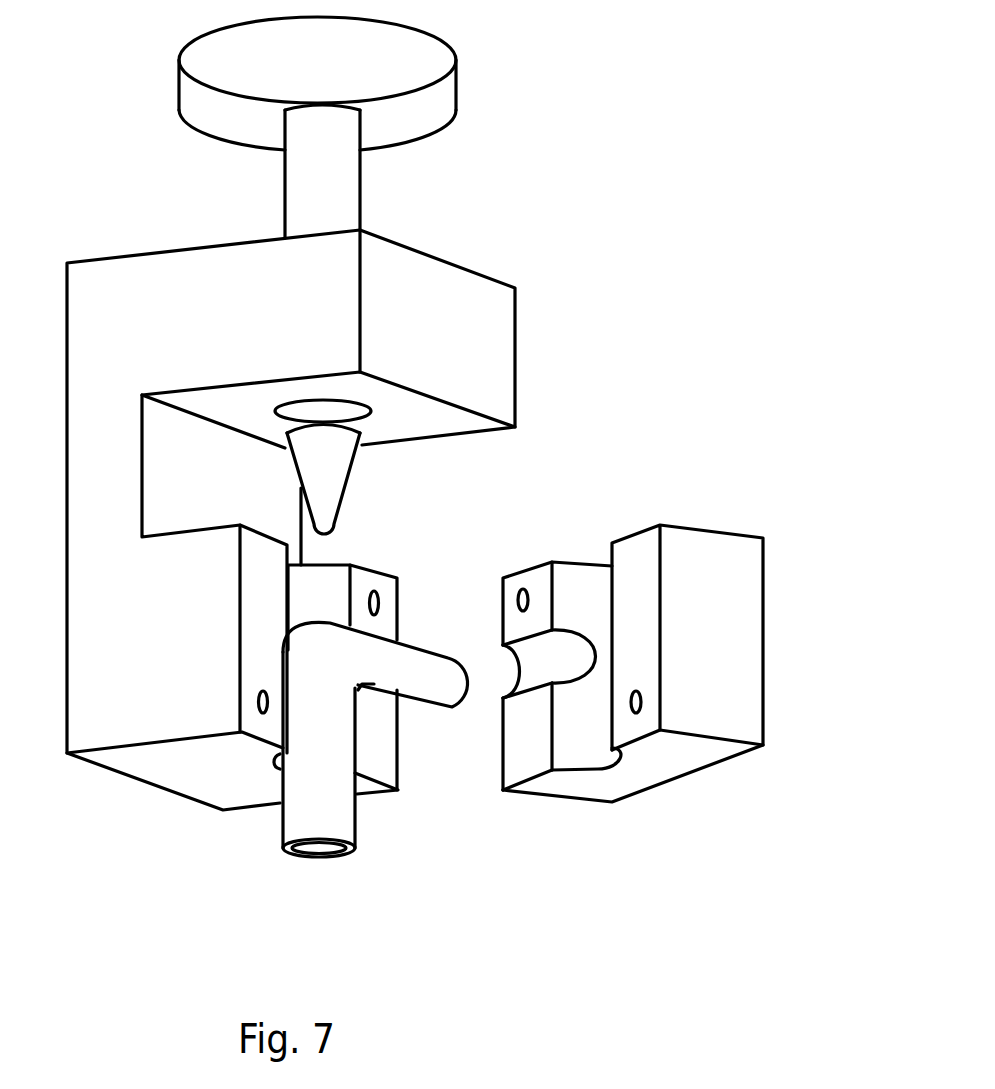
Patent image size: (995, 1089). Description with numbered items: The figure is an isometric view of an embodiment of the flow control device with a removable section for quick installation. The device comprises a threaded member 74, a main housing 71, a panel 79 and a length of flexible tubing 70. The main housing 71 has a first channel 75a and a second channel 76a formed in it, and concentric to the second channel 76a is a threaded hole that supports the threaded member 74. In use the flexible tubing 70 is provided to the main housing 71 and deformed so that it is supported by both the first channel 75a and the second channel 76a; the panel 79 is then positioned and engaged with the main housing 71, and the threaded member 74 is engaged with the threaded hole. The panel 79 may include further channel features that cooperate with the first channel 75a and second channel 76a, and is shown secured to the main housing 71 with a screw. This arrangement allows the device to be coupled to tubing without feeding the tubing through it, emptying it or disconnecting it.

The flexible tubing 70 is at (303, 800).
The main housing 71 is at (507, 403).
The threaded member 74 is at (353, 193).
The first channel 75a is at (368, 686).
The second channel 76a is at (322, 592).
The panel 79 is at (675, 753).